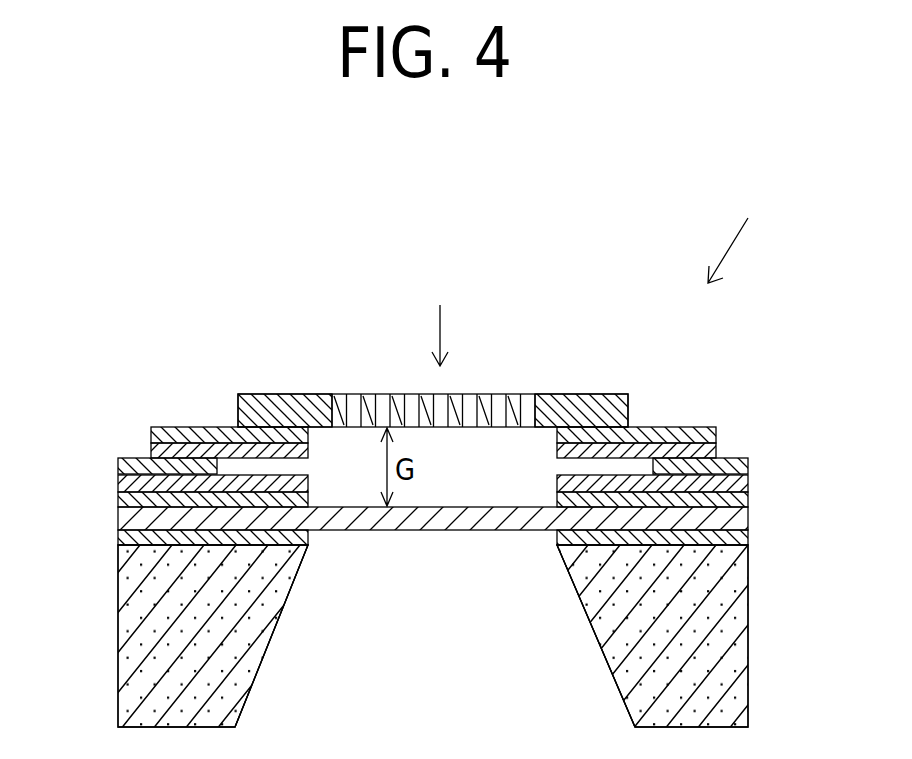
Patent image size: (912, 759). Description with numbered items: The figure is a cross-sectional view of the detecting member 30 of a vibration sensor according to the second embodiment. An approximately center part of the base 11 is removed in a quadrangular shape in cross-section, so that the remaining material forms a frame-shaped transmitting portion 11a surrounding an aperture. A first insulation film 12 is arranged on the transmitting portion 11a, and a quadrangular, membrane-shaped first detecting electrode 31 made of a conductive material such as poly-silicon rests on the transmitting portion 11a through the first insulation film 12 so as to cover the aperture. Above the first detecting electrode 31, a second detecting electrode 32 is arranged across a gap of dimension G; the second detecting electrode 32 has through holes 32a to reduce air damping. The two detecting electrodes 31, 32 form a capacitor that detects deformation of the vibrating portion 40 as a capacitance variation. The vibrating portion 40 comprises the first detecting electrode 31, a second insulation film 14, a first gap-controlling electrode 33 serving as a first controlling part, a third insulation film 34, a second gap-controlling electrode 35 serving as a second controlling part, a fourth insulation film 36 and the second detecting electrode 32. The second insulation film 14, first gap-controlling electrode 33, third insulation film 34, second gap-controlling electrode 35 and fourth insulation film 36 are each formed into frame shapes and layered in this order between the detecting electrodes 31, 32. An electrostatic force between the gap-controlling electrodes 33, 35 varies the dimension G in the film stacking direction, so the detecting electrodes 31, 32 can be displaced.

The base 11 is at (740, 592).
The transmitting portion 11a is at (630, 657).
The first insulation film 12 is at (118, 540).
The second insulation film 14 is at (749, 500).
The detecting member 30 is at (739, 232).
The first detecting electrode 31 is at (118, 522).
The second detecting electrode 32 is at (582, 396).
The through holes 32a is at (340, 395).
The first gap-controlling electrode 33 is at (749, 487).
The third insulation film 34 is at (749, 467).
The second gap-controlling electrode 35 is at (716, 452).
The fourth insulation film 36 is at (190, 433).
The vibrating portion 40 is at (441, 317).